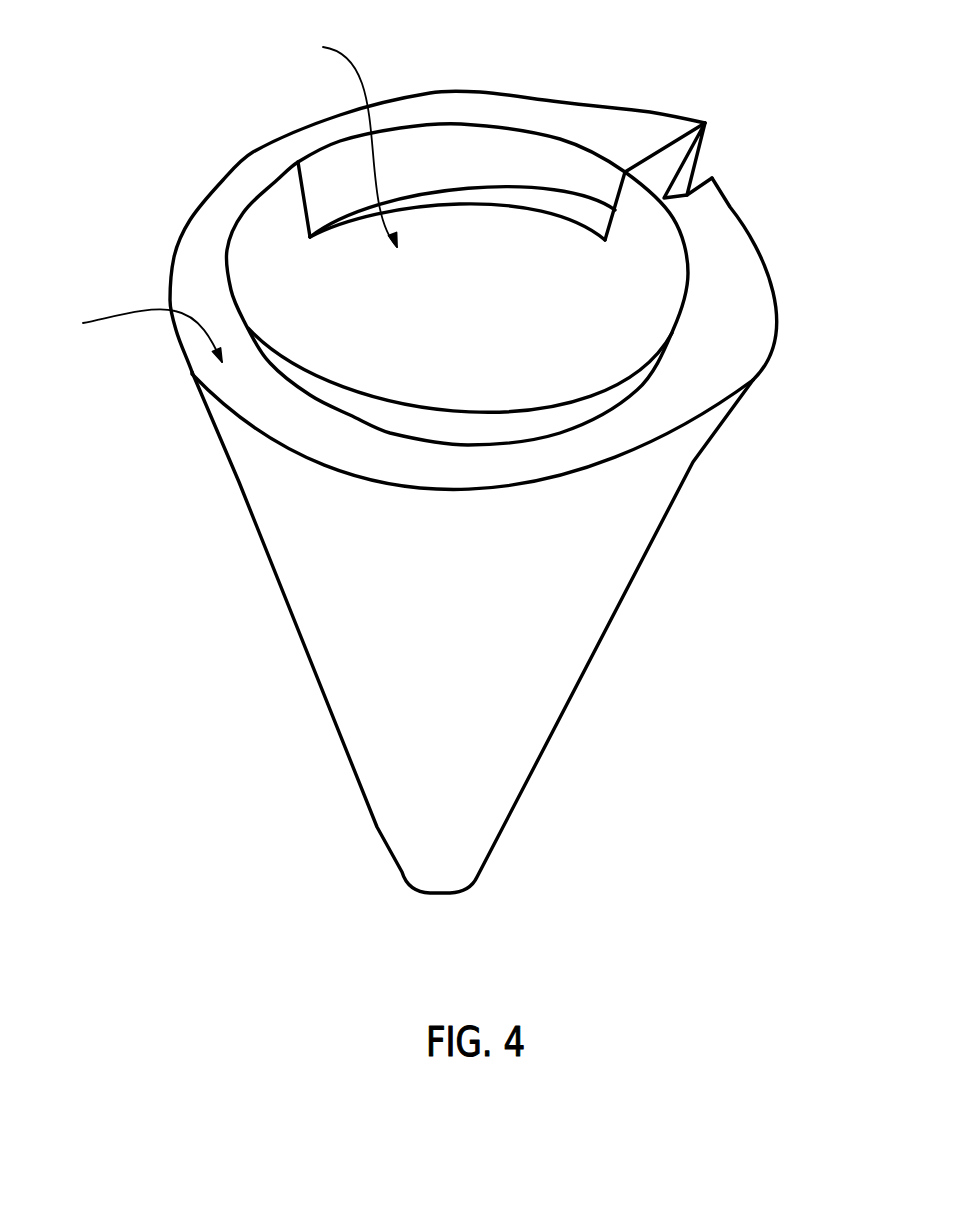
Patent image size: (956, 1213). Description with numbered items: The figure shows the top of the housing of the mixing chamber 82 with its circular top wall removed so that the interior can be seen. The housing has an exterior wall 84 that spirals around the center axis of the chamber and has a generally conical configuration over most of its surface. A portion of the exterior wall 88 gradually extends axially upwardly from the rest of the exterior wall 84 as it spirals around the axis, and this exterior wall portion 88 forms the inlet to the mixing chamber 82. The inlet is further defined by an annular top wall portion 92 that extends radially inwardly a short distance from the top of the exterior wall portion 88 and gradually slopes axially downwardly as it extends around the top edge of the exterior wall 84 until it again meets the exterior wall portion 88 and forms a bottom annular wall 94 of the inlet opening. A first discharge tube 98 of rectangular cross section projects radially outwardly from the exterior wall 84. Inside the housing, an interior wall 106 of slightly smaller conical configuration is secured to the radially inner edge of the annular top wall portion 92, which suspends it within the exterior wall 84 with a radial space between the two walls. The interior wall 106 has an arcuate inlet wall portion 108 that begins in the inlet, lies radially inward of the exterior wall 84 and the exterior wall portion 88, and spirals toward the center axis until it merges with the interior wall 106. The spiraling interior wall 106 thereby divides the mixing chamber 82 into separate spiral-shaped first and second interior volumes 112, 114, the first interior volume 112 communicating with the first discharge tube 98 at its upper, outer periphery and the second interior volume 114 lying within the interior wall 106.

The mixing chamber 82 is at (441, 457).
The exterior wall 84 is at (363, 715).
The annular top wall portion 92 is at (469, 255).
The bottom annular wall 94 is at (725, 228).
The first discharge tube 98 is at (722, 193).
The exterior wall portion 88 is at (659, 141).
The arcuate inlet wall portion 108 is at (507, 143).
The interior wall 106 is at (275, 273).
The first interior volume 112 is at (133, 335).
The second interior volume 114 is at (341, 140).